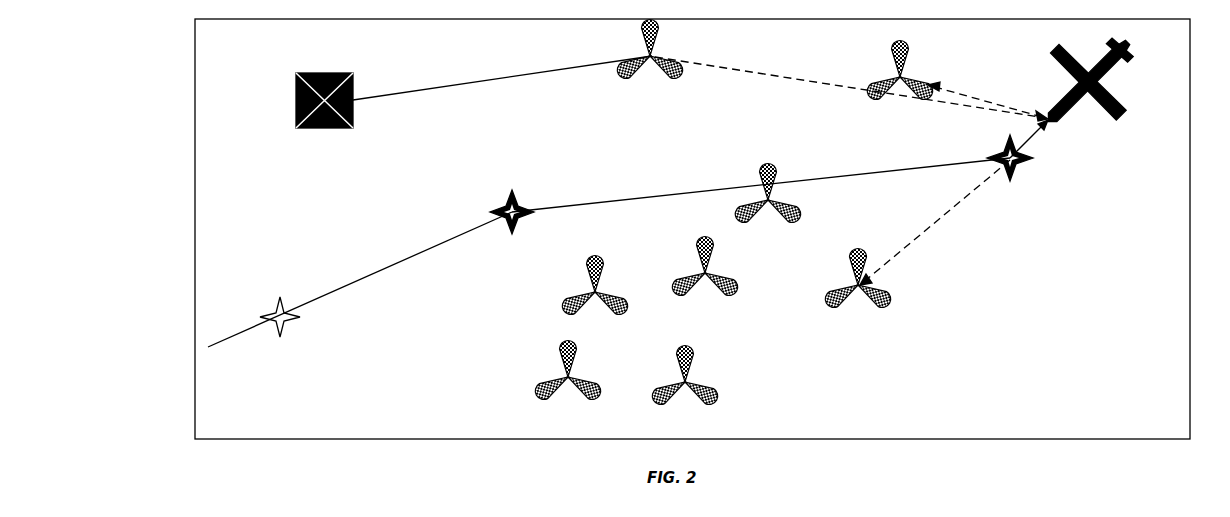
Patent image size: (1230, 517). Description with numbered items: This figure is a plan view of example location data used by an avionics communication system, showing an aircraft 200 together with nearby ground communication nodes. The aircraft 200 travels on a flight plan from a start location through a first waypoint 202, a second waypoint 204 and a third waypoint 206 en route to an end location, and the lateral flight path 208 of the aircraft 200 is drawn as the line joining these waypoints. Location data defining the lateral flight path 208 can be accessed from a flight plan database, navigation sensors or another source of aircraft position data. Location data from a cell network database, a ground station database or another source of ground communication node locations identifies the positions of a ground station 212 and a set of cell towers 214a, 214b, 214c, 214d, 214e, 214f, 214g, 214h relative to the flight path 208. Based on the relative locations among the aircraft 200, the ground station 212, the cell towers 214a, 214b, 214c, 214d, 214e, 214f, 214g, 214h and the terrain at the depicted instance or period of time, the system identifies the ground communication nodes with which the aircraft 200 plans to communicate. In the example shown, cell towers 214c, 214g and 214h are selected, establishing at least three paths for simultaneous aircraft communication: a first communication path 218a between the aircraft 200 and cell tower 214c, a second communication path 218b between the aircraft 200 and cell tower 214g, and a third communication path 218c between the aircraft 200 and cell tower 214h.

The aircraft 200 is at (1133, 52).
The first waypoint 202 is at (1033, 156).
The second waypoint 204 is at (530, 211).
The third waypoint 206 is at (285, 300).
The lateral flight path 208 is at (427, 250).
The ground station 212 is at (353, 73).
The cell tower 214a is at (572, 376).
The cell tower 214b is at (599, 291).
The cell tower 214c is at (656, 56).
The cell tower 214d is at (689, 379).
The cell tower 214e is at (710, 272).
The cell tower 214f is at (778, 177).
The cell tower 214g is at (879, 291).
The cell tower 214h is at (903, 74).
The first communication path 218a is at (772, 75).
The second communication path 218b is at (950, 210).
The third communication path 218c is at (967, 95).